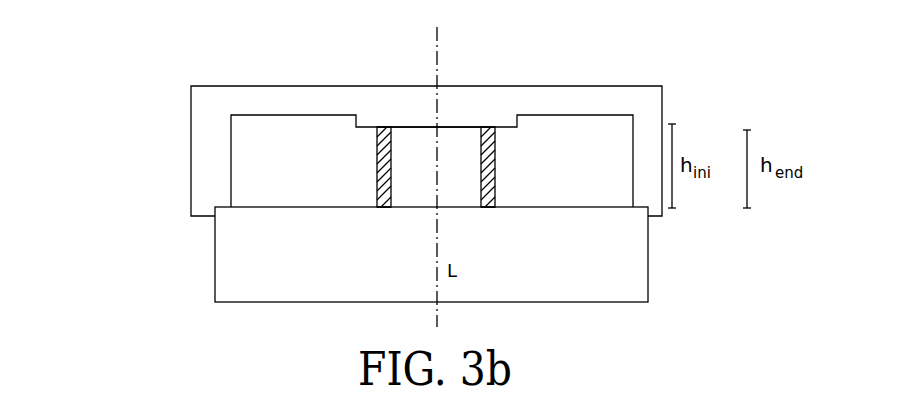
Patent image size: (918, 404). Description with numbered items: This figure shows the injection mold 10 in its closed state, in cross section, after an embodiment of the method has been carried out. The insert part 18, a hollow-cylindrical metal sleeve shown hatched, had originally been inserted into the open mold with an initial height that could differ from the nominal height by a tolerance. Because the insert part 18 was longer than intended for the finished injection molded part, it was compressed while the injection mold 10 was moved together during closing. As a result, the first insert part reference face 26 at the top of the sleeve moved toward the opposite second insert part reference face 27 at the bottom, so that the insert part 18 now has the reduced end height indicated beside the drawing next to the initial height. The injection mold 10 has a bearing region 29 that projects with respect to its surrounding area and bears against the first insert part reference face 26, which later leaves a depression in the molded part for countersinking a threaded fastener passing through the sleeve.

The injection mold 10 is at (158, 80).
The insert part 18 is at (495, 172).
The first insert part reference face 26 is at (383, 127).
The second insert part reference face 27 is at (383, 207).
The bearing region 29 is at (426, 127).